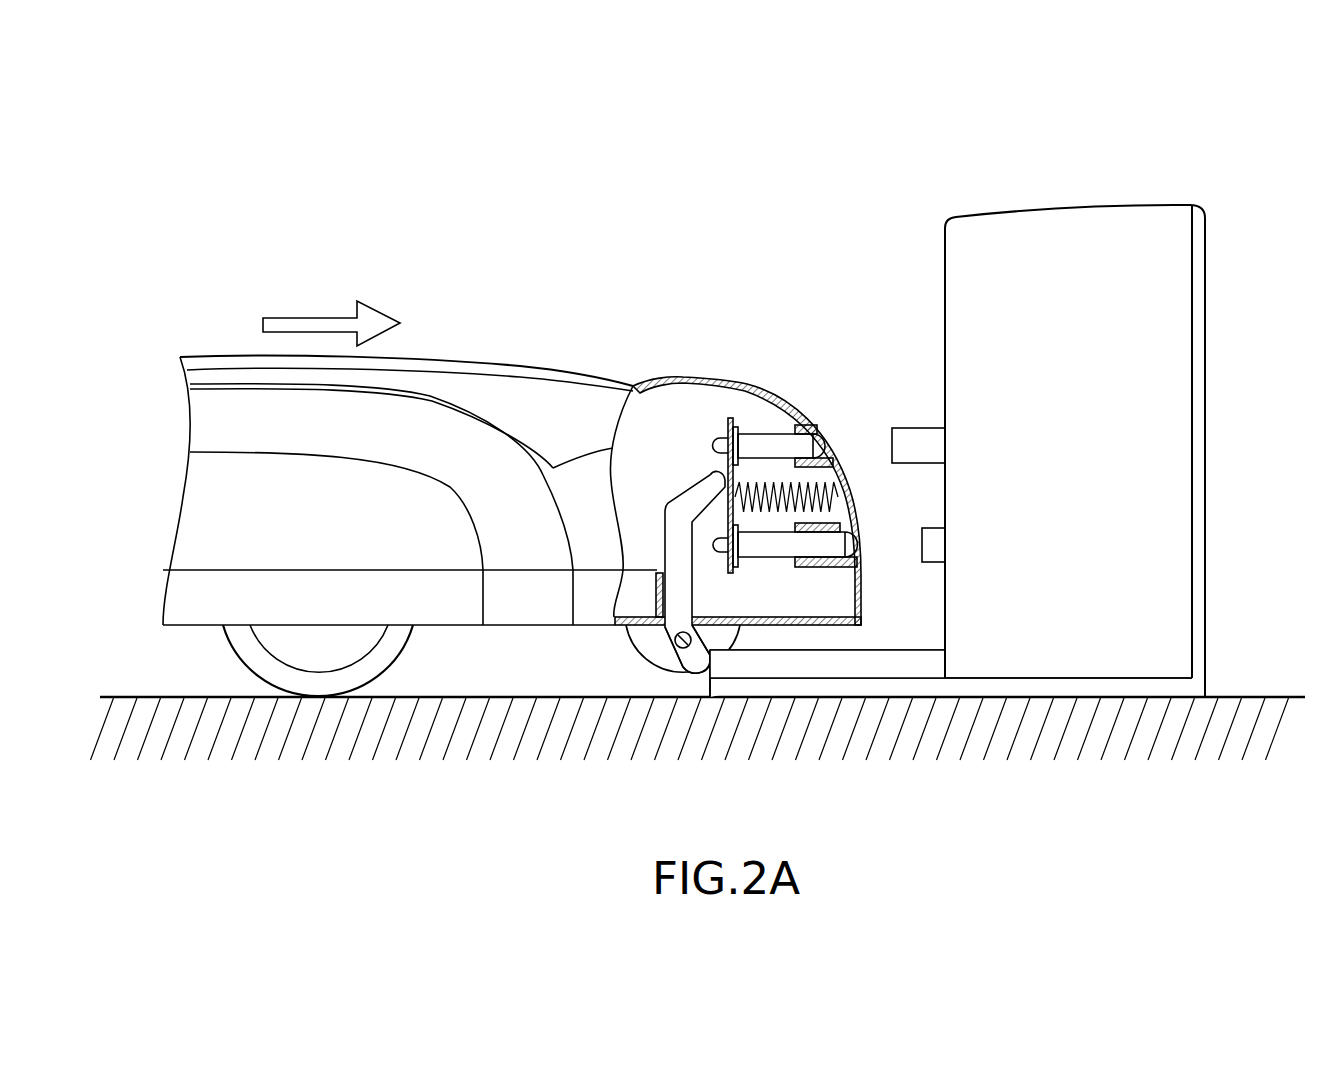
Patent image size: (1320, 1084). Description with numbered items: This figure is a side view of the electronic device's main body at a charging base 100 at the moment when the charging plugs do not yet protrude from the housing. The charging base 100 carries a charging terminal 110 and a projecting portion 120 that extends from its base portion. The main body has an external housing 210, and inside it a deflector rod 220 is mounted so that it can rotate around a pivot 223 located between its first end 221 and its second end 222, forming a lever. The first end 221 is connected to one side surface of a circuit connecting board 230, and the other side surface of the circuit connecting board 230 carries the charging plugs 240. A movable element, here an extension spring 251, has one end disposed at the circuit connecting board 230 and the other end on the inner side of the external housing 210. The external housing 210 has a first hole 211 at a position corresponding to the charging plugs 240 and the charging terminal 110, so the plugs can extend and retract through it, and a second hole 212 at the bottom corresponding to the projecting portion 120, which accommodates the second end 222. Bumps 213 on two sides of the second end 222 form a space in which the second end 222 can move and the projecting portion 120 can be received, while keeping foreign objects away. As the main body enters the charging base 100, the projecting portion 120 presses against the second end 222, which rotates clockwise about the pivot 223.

The charging base 100 is at (1142, 206).
The charging terminal 110 is at (922, 540).
The projecting portion 120 is at (863, 665).
The external housing 210 is at (222, 356).
The first hole 211 is at (830, 456).
The second hole 212 is at (700, 622).
The bumps 213 is at (645, 650).
The deflector rod 220 is at (649, 628).
The first end 221 is at (715, 487).
The second end 222 is at (695, 662).
The pivot 223 is at (678, 648).
The circuit connecting board 230 is at (728, 428).
The charging plug 240 is at (780, 443).
The extension spring 251 is at (762, 480).